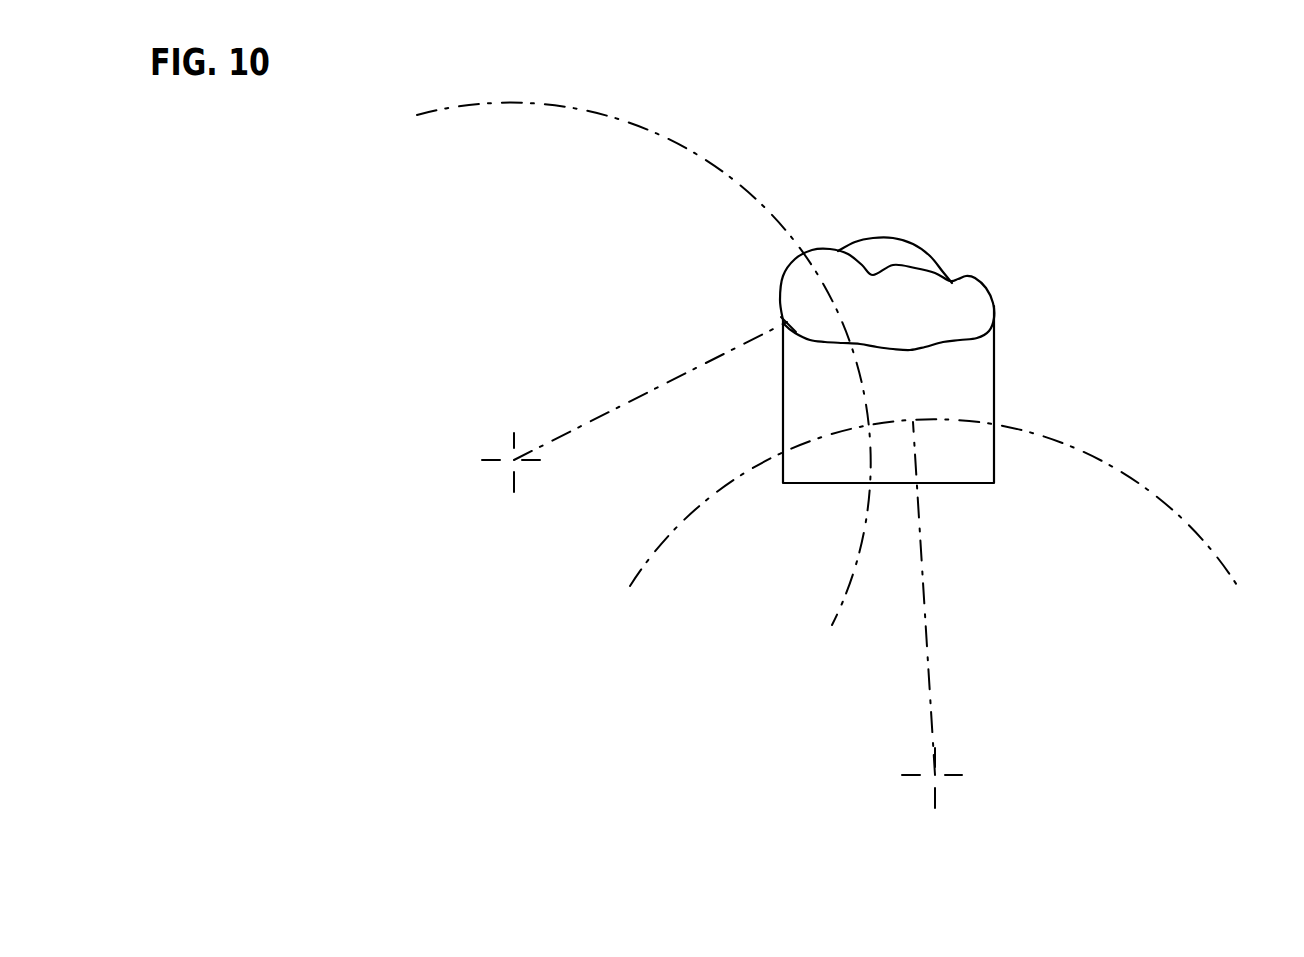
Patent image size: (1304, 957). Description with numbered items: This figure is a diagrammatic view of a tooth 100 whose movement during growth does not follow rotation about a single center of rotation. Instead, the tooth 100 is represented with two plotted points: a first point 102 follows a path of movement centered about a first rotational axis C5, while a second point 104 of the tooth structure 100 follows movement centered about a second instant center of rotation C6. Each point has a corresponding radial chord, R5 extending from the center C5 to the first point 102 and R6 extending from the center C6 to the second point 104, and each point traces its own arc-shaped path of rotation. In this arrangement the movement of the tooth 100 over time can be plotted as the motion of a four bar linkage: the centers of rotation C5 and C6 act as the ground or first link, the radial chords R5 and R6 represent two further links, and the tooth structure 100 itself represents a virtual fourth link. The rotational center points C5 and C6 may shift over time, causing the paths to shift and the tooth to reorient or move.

The tooth 100 is at (993, 308).
The first point 102 is at (833, 295).
The second point 104 is at (913, 437).
The radial chord R5 is at (715, 357).
The first rotational axis C5 is at (500, 449).
The radial chord R6 is at (927, 636).
The second instant center of rotation C6 is at (923, 764).